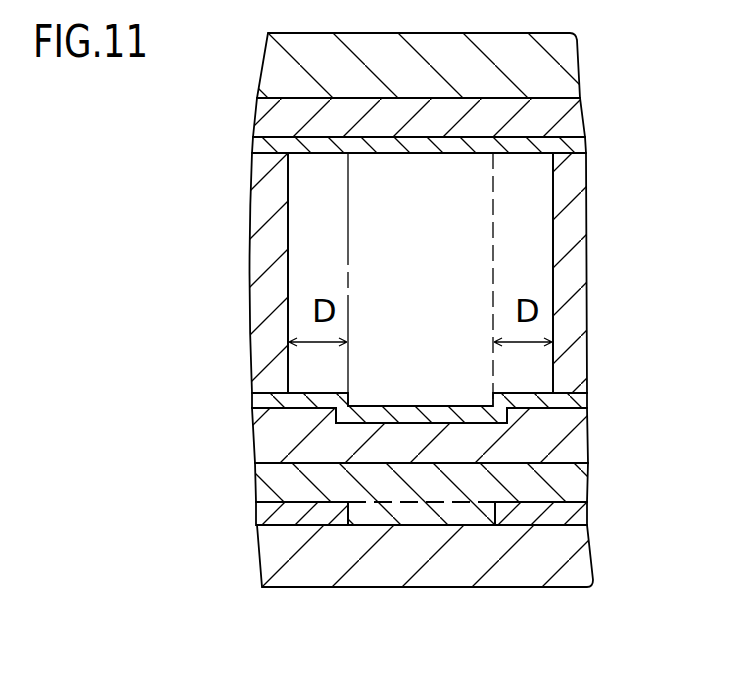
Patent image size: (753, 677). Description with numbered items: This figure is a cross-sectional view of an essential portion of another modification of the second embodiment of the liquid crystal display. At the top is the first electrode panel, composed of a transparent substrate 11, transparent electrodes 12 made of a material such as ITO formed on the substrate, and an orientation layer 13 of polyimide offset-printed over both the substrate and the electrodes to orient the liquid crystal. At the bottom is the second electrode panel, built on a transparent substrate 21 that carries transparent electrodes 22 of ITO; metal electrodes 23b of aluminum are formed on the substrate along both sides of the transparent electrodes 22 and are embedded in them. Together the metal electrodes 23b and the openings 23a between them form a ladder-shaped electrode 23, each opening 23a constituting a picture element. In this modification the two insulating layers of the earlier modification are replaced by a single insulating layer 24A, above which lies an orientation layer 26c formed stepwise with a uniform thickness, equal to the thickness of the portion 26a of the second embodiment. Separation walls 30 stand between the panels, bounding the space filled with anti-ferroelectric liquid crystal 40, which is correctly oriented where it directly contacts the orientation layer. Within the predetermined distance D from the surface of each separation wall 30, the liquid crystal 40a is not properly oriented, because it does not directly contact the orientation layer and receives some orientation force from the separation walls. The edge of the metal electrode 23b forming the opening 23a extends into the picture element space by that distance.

The transparent substrate 11 is at (580, 67).
The transparent electrodes 12 is at (568, 120).
The orientation layer 13 is at (570, 143).
The separation wall 30 is at (260, 198).
The anti-ferroelectric liquid crystal 40 is at (478, 208).
The anti-ferroelectric liquid crystal 40a is at (290, 292).
The orientation layer 26c is at (575, 398).
The portion 26a is at (417, 416).
The insulating layer 24A is at (588, 435).
The transparent electrodes 22 is at (578, 480).
The ladder-shaped electrode 23 is at (255, 517).
The metal electrodes 23b is at (580, 515).
The opening 23a is at (353, 516).
The transparent substrate 21 is at (578, 563).